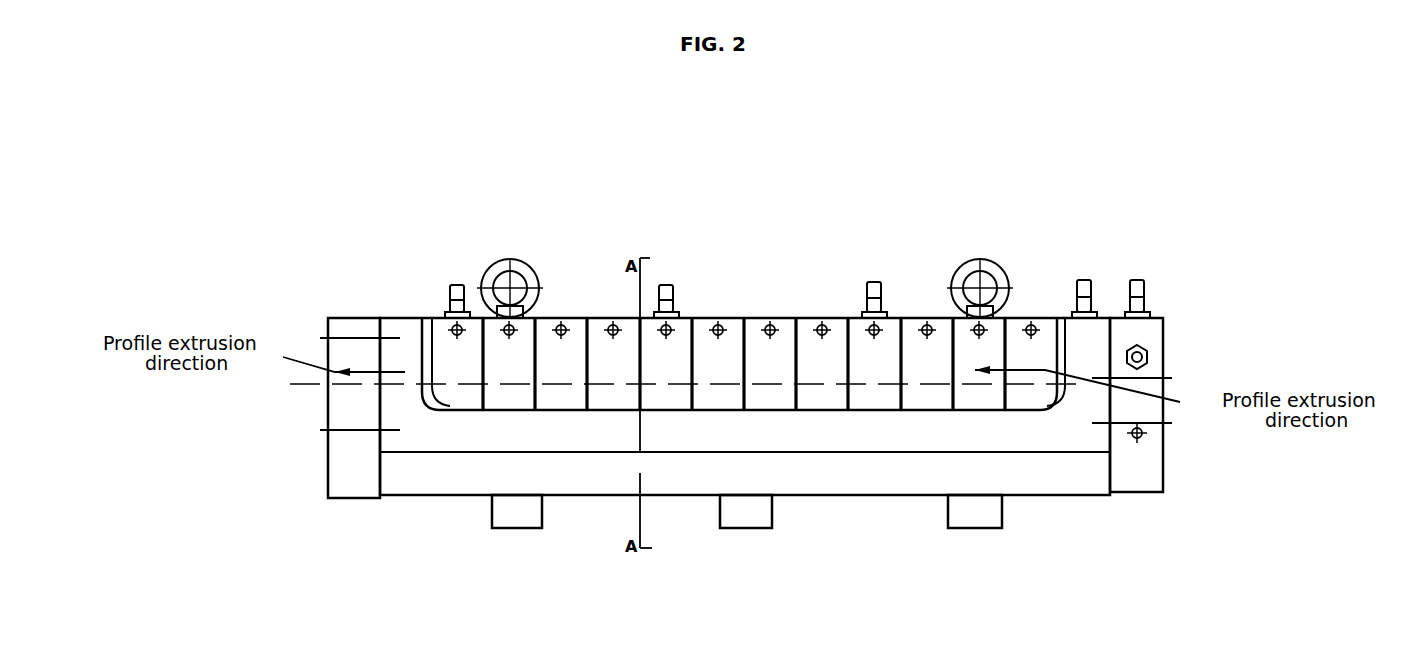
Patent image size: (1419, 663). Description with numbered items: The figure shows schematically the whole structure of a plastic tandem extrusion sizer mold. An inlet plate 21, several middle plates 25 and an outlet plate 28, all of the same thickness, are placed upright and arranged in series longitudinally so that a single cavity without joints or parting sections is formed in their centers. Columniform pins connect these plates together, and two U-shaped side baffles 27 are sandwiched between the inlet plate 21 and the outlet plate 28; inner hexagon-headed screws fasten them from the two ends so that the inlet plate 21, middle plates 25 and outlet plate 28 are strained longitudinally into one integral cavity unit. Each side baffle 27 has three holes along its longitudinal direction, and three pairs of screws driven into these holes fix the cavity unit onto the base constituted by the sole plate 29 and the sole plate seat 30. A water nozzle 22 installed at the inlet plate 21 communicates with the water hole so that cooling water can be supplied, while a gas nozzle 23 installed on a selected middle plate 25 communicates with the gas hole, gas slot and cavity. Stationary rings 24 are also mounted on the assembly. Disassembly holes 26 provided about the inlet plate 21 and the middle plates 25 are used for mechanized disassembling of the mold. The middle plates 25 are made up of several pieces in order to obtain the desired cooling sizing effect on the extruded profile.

The inlet plate 21 is at (1136, 345).
The water nozzle 22 is at (1100, 281).
The gas nozzle 23 is at (751, 256).
The stationary rings 24 is at (745, 256).
The middle plate 25 is at (744, 267).
The disassembly hole 26 is at (744, 303).
The side baffle 27 is at (685, 304).
The outlet plate 28 is at (346, 348).
The base 29 is at (741, 447).
The sole plate seat 30 is at (737, 535).